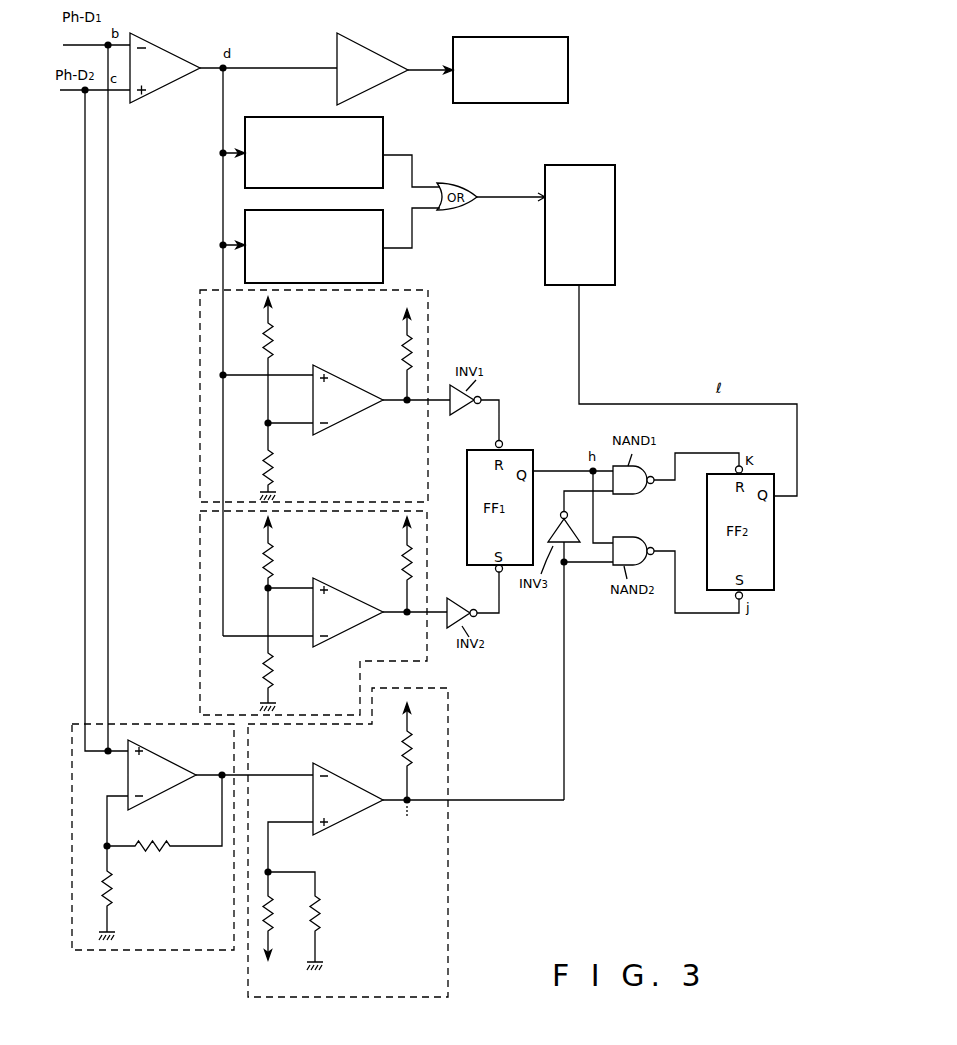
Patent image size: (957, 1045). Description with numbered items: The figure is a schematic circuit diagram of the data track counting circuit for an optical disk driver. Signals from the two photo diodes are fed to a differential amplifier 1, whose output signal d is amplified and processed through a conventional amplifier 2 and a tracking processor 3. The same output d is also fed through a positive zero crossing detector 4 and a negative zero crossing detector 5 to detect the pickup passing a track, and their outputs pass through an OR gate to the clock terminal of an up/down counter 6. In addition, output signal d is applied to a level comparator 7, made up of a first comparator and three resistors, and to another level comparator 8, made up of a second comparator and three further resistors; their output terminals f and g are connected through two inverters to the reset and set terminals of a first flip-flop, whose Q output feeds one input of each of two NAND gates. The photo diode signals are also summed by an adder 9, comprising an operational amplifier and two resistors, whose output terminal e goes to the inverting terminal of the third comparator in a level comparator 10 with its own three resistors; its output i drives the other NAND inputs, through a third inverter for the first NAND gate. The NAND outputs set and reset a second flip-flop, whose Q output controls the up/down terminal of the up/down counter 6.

The differential amplifier 1 is at (160, 49).
The amplifier 2 is at (375, 53).
The tracking processor 3 is at (543, 37).
The positive zero crossing detector 4 is at (385, 137).
The negative zero crossing detector 5 is at (386, 275).
The up/down counter 6 is at (616, 190).
The level comparator 7 is at (200, 345).
The level comparator 8 is at (200, 560).
The adder 9 is at (167, 722).
The level comparator 10 is at (448, 900).